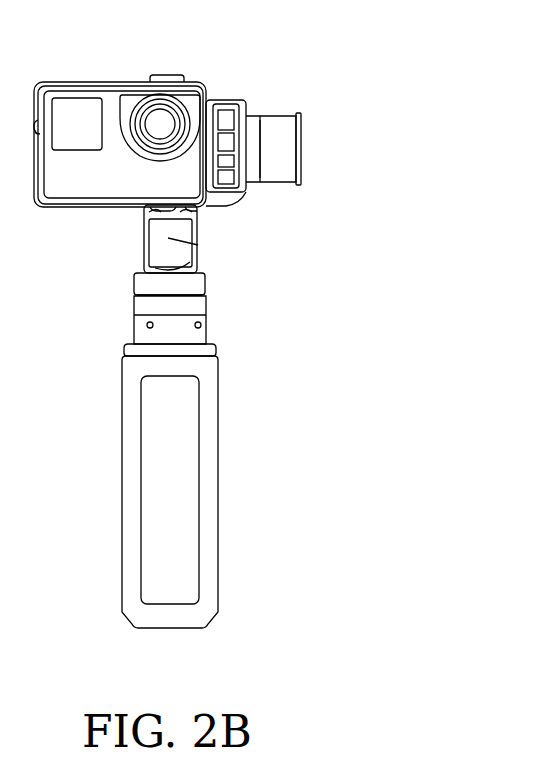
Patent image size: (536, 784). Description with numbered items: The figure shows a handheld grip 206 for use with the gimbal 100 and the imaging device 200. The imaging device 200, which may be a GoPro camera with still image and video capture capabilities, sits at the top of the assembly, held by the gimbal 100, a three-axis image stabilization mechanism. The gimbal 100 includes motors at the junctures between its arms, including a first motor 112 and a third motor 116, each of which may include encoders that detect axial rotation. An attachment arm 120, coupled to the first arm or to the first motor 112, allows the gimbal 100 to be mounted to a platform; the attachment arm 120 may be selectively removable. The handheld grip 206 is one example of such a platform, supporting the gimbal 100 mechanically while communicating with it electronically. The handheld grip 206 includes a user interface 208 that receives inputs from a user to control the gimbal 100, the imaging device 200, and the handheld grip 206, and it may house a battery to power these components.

The gimbal 100 is at (211, 322).
The first motor 112 is at (203, 282).
The third motor 116 is at (301, 147).
The attachment arm 120 is at (215, 101).
The imaging device 200 is at (140, 183).
The handheld grip 206 is at (217, 486).
The user interface 208 is at (198, 434).